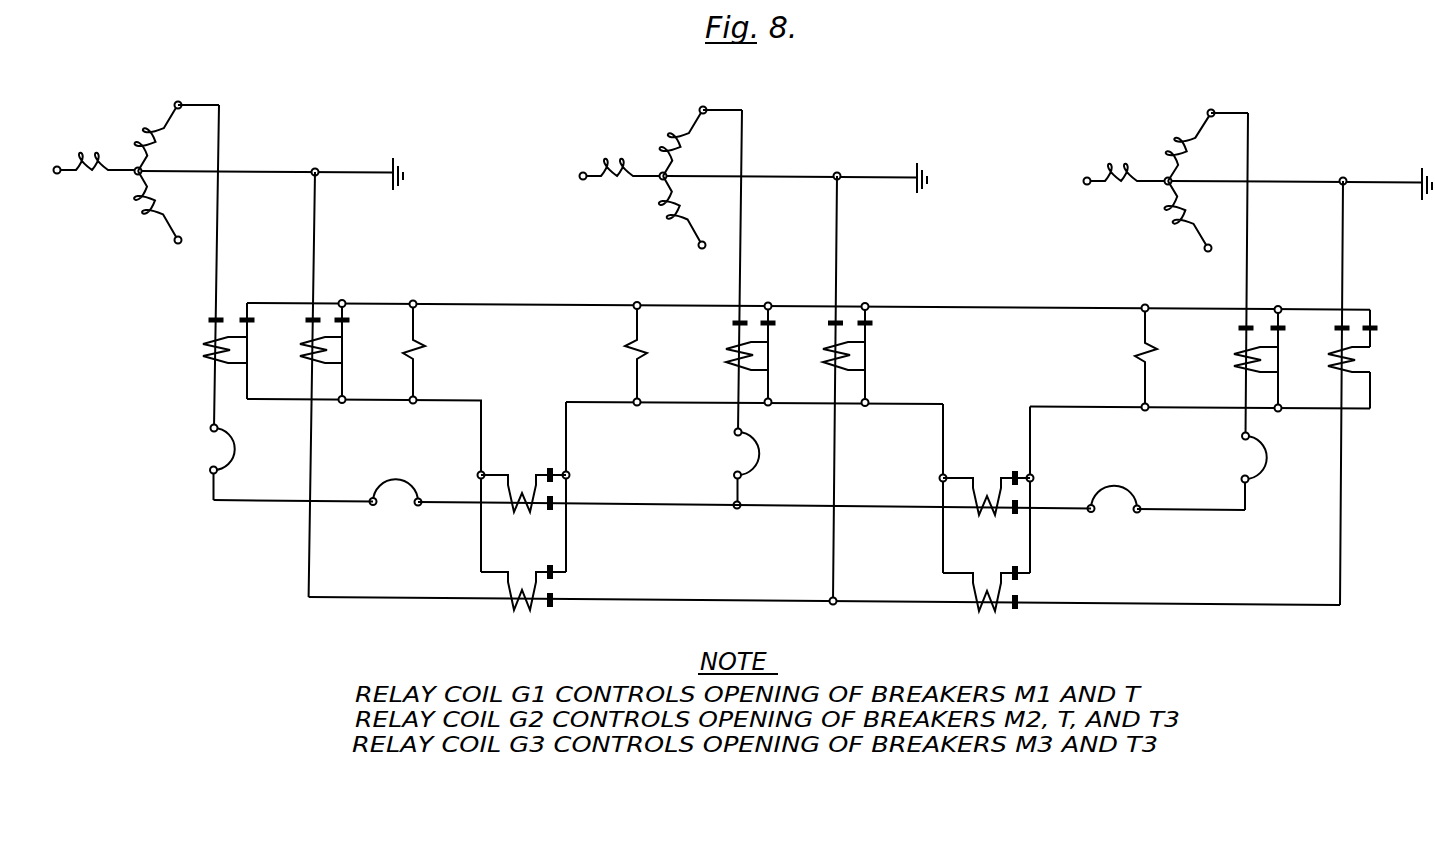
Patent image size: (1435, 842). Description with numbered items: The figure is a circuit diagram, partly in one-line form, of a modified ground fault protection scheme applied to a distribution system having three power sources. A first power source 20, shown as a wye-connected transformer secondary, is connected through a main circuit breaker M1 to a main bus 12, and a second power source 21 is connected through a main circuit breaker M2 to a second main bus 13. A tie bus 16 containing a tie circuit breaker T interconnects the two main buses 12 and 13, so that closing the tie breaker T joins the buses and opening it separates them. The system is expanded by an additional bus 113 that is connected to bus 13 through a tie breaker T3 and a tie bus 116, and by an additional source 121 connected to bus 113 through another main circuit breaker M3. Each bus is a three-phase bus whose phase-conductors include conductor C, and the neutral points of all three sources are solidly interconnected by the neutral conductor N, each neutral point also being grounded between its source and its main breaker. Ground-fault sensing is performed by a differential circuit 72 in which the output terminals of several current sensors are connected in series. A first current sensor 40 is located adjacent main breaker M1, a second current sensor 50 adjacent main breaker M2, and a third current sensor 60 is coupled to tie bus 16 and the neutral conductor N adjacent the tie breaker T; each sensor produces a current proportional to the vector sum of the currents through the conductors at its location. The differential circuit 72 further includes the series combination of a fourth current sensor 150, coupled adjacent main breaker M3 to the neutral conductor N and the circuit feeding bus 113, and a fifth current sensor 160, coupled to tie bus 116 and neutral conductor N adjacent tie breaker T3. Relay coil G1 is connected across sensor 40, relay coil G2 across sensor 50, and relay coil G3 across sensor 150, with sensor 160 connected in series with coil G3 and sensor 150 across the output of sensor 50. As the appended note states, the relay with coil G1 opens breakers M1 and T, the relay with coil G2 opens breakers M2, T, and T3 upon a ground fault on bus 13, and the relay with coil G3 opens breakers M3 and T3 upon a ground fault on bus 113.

The power source 20 is at (128, 139).
The power source 21 is at (653, 141).
The additional source 121 is at (1150, 146).
The first current sensor 40 is at (284, 362).
The second current sensor 50 is at (812, 367).
The fourth current sensor 150 is at (1318, 372).
The third current sensor 60 is at (537, 553).
The fifth current sensor 160 is at (1003, 556).
The differential circuit 72 is at (577, 304).
The main bus 12 is at (275, 504).
The main bus 13 is at (650, 507).
The tie bus 16 is at (460, 504).
The tie bus 116 is at (886, 509).
The additional bus 113 is at (1190, 511).
The relay coil G1 is at (421, 342).
The relay coil G2 is at (630, 350).
The relay coil G3 is at (1138, 360).
The main circuit breaker M1 is at (235, 447).
The main circuit breaker M2 is at (758, 452).
The main circuit breaker M3 is at (1264, 455).
The tie circuit breaker T is at (406, 482).
The tie breaker T3 is at (1120, 490).
The phase-conductor C is at (216, 273).
The neutral conductor N is at (313, 273).